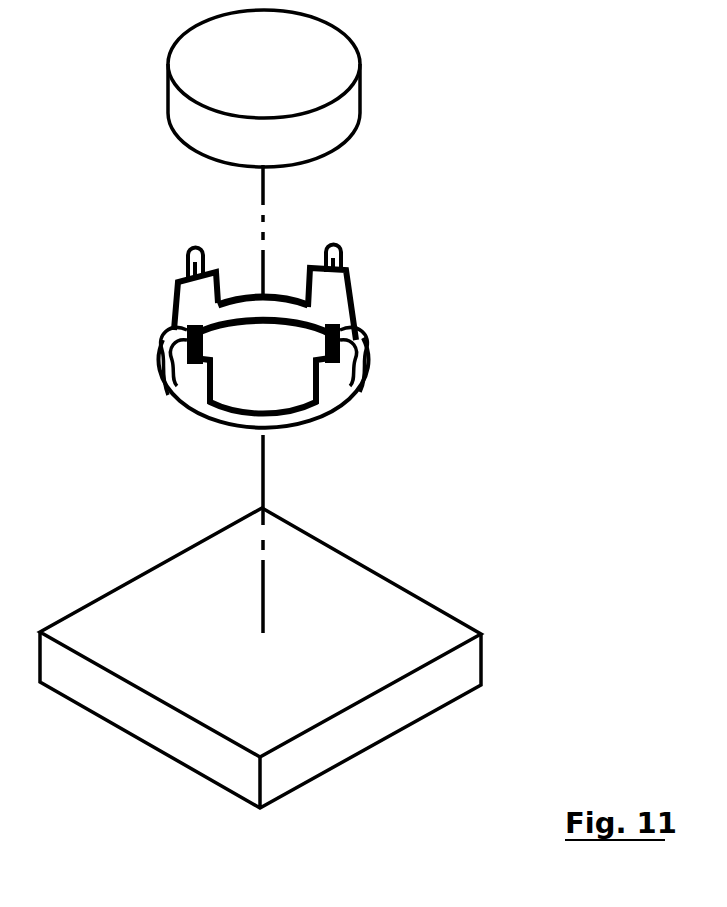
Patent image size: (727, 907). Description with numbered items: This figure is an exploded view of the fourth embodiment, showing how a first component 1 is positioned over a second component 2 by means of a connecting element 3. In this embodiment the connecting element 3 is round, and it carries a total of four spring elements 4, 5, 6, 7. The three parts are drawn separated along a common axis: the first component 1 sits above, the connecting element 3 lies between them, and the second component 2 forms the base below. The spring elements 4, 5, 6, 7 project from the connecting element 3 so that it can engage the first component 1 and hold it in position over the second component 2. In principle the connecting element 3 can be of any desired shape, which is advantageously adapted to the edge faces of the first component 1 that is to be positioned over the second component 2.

The first component 1 is at (350, 97).
The second component 2 is at (380, 595).
The connecting element 3 is at (365, 390).
The spring element 4 is at (365, 335).
The spring element 5 is at (163, 348).
The spring element 6 is at (342, 262).
The spring element 7 is at (180, 265).